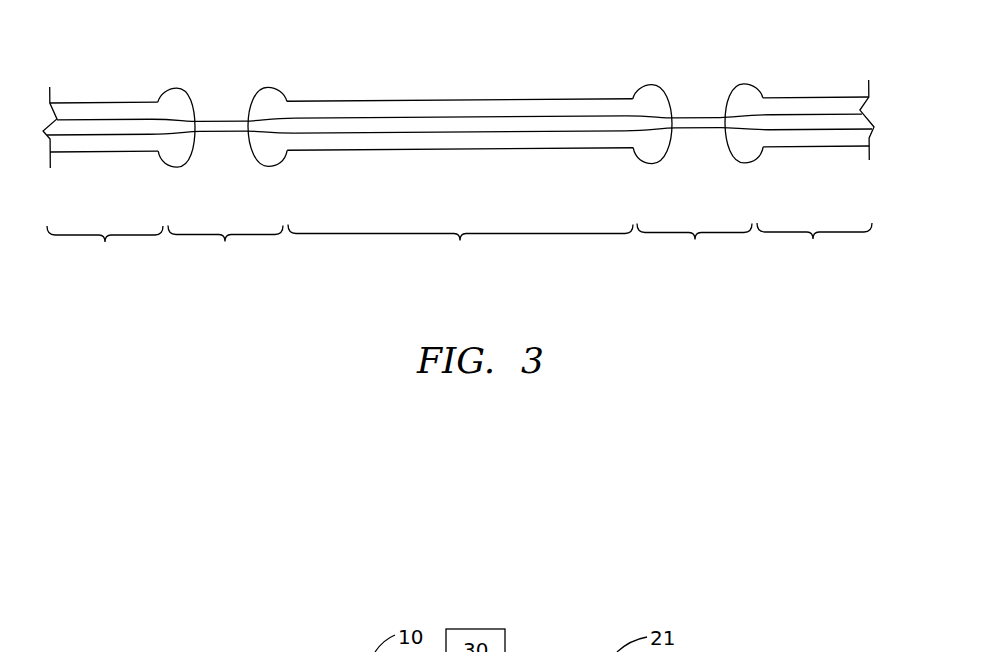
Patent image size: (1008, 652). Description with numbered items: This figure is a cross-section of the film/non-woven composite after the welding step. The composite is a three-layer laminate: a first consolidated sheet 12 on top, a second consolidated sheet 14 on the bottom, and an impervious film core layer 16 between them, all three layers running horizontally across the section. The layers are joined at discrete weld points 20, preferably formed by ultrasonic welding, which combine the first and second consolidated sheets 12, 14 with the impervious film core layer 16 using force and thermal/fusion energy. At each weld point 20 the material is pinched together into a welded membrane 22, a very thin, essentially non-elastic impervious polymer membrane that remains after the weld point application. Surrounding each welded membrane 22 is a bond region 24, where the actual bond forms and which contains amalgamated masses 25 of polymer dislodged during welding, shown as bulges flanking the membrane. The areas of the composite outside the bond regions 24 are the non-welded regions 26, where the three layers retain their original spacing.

The first consolidated sheet 12 is at (850, 103).
The second consolidated sheet 14 is at (855, 140).
The impervious film core layer 16 is at (857, 123).
The weld points 20 is at (492, 95).
The welded membrane 22 is at (222, 133).
The bond region 24 is at (460, 250).
The amalgamated masses 25 is at (272, 108).
The non-welded regions 26 is at (459, 250).